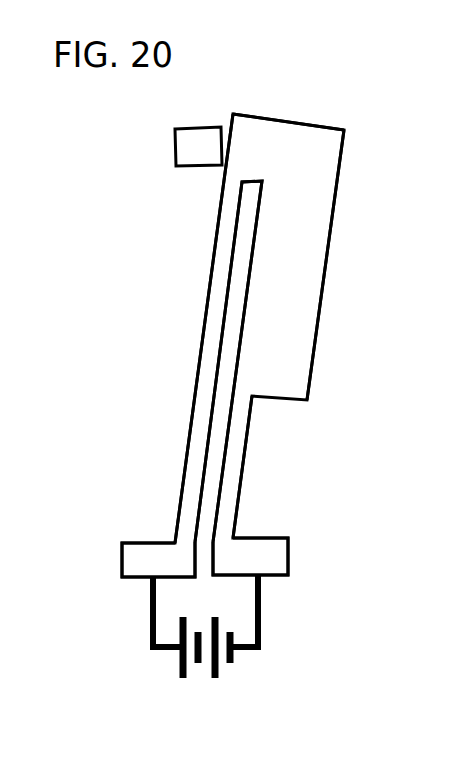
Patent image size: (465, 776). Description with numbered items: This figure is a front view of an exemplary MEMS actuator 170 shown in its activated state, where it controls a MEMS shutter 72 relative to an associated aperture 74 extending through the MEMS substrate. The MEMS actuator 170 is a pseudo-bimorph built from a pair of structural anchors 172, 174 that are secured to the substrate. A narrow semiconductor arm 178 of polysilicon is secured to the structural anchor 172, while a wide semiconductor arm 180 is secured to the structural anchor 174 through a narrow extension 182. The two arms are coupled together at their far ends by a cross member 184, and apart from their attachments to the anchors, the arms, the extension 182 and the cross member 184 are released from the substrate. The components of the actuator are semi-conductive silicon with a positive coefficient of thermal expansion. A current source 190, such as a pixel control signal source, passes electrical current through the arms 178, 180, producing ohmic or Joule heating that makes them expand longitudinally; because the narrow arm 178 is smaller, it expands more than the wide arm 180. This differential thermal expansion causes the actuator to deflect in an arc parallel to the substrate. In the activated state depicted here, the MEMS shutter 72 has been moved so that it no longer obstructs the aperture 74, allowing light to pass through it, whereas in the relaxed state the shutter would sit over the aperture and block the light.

The MEMS shutter 72 is at (298, 284).
The aperture 74 is at (175, 140).
The MEMS actuator 170 is at (170, 253).
The structural anchor 172 is at (123, 553).
The structural anchor 174 is at (287, 550).
The narrow semiconductor arm 178 is at (200, 365).
The wide semiconductor arm 180 is at (322, 250).
The narrow extension 182 is at (243, 440).
The cross member 184 is at (258, 145).
The current source 190 is at (182, 657).